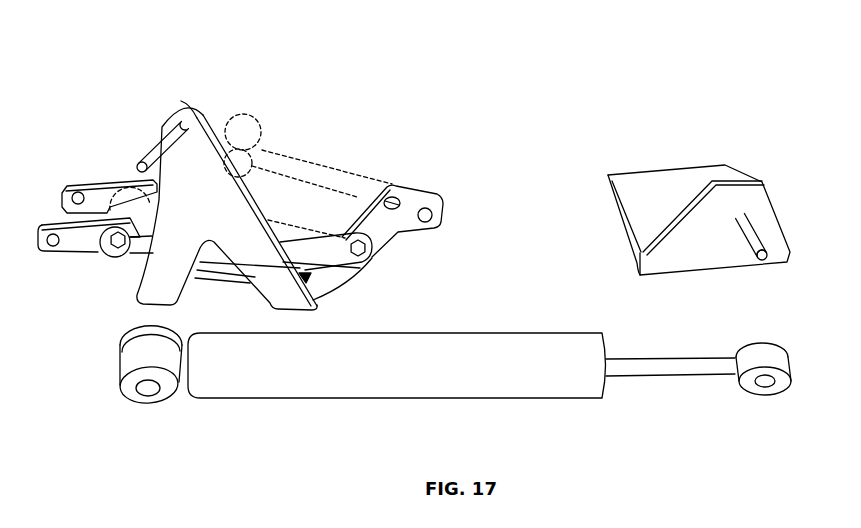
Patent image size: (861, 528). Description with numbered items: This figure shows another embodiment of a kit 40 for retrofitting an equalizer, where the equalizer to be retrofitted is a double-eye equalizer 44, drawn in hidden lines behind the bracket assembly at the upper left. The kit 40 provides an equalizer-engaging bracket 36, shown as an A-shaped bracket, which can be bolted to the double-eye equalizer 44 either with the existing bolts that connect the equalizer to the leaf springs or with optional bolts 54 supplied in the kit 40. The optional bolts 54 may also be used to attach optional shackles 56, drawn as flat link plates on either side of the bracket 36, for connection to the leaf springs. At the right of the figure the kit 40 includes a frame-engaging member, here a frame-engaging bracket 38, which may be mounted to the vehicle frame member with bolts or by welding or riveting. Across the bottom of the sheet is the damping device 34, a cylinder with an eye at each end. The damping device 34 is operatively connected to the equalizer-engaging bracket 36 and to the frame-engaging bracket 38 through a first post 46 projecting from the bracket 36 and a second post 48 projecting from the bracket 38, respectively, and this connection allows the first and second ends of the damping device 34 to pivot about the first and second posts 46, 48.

The kit 40 is at (142, 66).
The equalizer-engaging bracket 36 is at (130, 277).
The first post 46 is at (147, 152).
The double-eye equalizer 44 is at (289, 178).
The shackles 56 is at (43, 220).
The bolts 54 is at (110, 250).
The frame-engaging bracket 38 is at (647, 203).
The second post 48 is at (757, 237).
The damping device 34 is at (508, 342).